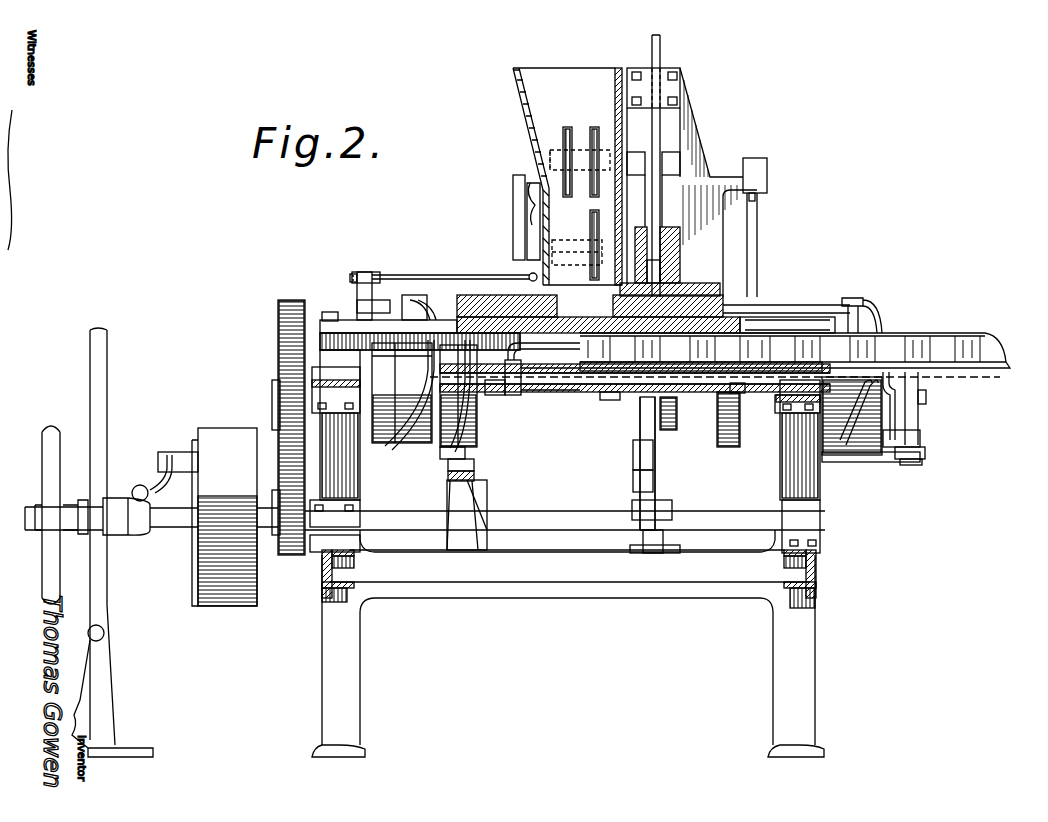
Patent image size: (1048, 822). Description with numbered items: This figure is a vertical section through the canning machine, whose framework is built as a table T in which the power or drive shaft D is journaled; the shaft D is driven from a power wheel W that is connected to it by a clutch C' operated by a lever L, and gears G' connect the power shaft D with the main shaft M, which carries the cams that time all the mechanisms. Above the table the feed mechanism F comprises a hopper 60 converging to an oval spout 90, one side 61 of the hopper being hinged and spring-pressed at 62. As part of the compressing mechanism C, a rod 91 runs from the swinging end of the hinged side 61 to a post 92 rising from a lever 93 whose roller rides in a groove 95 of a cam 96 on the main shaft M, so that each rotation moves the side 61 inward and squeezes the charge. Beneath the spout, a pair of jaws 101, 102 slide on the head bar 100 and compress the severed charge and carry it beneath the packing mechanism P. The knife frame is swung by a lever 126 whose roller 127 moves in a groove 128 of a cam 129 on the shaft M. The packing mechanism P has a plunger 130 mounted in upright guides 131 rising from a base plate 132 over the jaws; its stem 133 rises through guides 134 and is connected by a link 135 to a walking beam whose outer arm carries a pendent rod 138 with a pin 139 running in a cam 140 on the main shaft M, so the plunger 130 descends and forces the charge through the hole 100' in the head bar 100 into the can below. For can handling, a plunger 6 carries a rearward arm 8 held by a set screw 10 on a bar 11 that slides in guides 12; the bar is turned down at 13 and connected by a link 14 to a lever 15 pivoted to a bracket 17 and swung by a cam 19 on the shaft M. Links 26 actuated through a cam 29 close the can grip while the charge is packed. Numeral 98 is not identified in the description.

The stem 133 is at (662, 48).
The guides 134 is at (675, 90).
The link 135 is at (665, 186).
The pendent rod 138 is at (757, 212).
The upright guides 131 is at (680, 250).
The plunger 130 is at (683, 272).
The base plate 132 is at (725, 285).
The jaw 102 is at (715, 305).
The head bar 100 is at (530, 295).
The hole 100' is at (776, 324).
The hopper 60 is at (580, 143).
The spring 62 is at (536, 200).
The hinged side 61 is at (535, 222).
The spout 90 is at (620, 222).
The post 92 is at (368, 272).
The jaw 101 is at (408, 295).
The rod 91 is at (462, 280).
The lever 93 is at (352, 303).
The arm 8 is at (508, 355).
The bar 11 is at (497, 374).
The set screw 10 is at (513, 392).
The guides 12 is at (590, 394).
The plunger 6 is at (618, 393).
The cam 29 is at (677, 421).
The pin 139 is at (745, 382).
The cam 19 is at (920, 380).
The turned-down end 13 is at (922, 398).
The lever 15 is at (912, 440).
The link 14 is at (908, 460).
The cam 96 is at (867, 455).
The bracket 17 is at (850, 455).
The cam 140 is at (725, 445).
The links 26 is at (656, 455).
The groove 95 is at (405, 432).
The pipe 98 is at (415, 447).
The roller 127 is at (465, 452).
The cam 129 is at (450, 455).
The lever 126 is at (474, 472).
The groove 128 is at (455, 480).
The feed mechanism F is at (514, 108).
The packing mechanism P is at (711, 172).
The compressing mechanism C is at (568, 278).
The gears G' is at (273, 427).
The lever L is at (108, 380).
The power wheel W is at (222, 430).
The clutch C' is at (150, 481).
The main shaft M is at (715, 410).
The drive shaft D is at (566, 520).
The table T is at (822, 570).